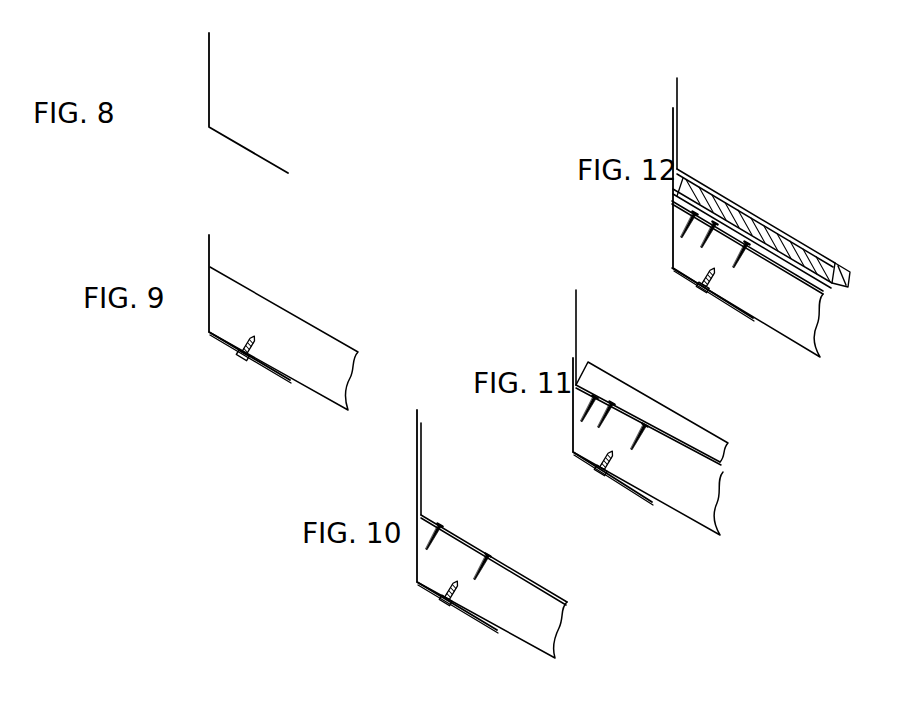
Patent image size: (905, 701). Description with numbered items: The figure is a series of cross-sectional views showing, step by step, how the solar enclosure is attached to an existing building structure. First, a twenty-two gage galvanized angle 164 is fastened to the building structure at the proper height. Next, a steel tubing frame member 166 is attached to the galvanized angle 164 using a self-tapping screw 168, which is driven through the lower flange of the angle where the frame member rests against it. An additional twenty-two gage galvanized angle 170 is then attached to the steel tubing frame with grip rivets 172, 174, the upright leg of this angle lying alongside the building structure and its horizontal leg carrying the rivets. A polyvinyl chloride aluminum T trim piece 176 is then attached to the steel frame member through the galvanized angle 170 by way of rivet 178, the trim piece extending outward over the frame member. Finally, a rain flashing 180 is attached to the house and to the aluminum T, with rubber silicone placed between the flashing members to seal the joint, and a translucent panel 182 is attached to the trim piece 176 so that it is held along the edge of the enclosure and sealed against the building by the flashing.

In FIG. 8, the galvanized angle 164 is at (255, 152).
In FIG. 9, the galvanized angle 164 is at (250, 309).
In FIG. 10, the galvanized angle 164 is at (457, 521).
In FIG. 11, the galvanized angle 164 is at (613, 431).
In FIG. 12, the galvanized angle 164 is at (713, 214).
In FIG. 9, the panel 166 is at (275, 305).
In FIG. 9, the self-tapping screw 168 is at (245, 356).
In FIG. 10, the galvanized angle 170 is at (422, 481).
In FIG. 10, the grip rivet 172 is at (442, 526).
In FIG. 10, the grip rivet 174 is at (490, 556).
In FIG. 11, the trim piece 176 is at (673, 405).
In FIG. 12, the trim piece 176 is at (753, 263).
In FIG. 11, the rivet 178 is at (618, 408).
In FIG. 12, the rain flashing 180 is at (679, 113).
In FIG. 12, the translucent panel 182 is at (846, 276).